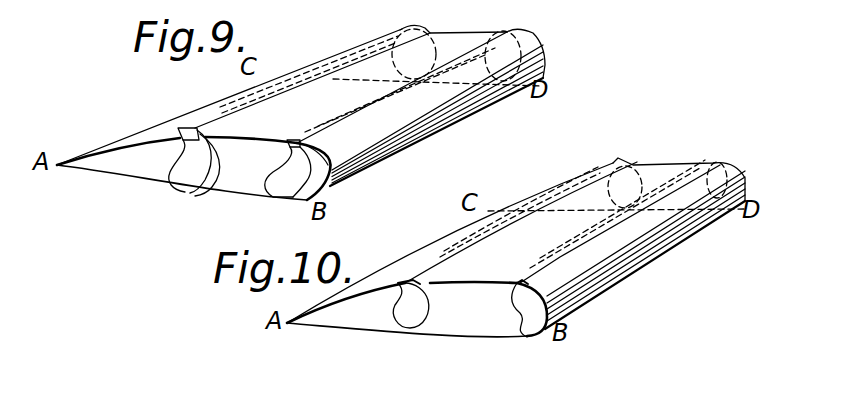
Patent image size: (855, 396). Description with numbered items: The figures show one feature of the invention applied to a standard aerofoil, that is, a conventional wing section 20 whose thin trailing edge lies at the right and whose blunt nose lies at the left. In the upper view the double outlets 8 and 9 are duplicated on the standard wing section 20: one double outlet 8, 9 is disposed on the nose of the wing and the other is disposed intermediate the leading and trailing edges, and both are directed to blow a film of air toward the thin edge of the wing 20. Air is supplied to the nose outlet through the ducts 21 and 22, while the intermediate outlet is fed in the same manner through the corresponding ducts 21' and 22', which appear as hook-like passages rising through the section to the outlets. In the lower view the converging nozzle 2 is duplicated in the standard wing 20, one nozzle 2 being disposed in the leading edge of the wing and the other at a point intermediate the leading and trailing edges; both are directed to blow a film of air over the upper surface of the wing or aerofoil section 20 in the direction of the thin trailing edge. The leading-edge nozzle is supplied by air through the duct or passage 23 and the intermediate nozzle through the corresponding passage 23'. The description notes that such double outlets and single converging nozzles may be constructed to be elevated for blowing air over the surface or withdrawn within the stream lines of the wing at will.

In FIG. 10, the converging nozzle 2 is at (398, 282).
In FIG. 9, the double outlet 8 is at (180, 135).
In FIG. 9, the double outlet 9 is at (180, 130).
In FIG. 9, the standard wing section 20 is at (150, 174).
In FIG. 10, the standard wing section 20 is at (433, 328).
In FIG. 9, the duct 21 is at (165, 187).
In FIG. 9, the duct 22 is at (209, 180).
In FIG. 9, the duct 21' is at (284, 189).
In FIG. 9, the duct 22' is at (345, 176).
In FIG. 10, the duct or passage 23 is at (393, 323).
In FIG. 10, the duct or passage 23' is at (532, 327).